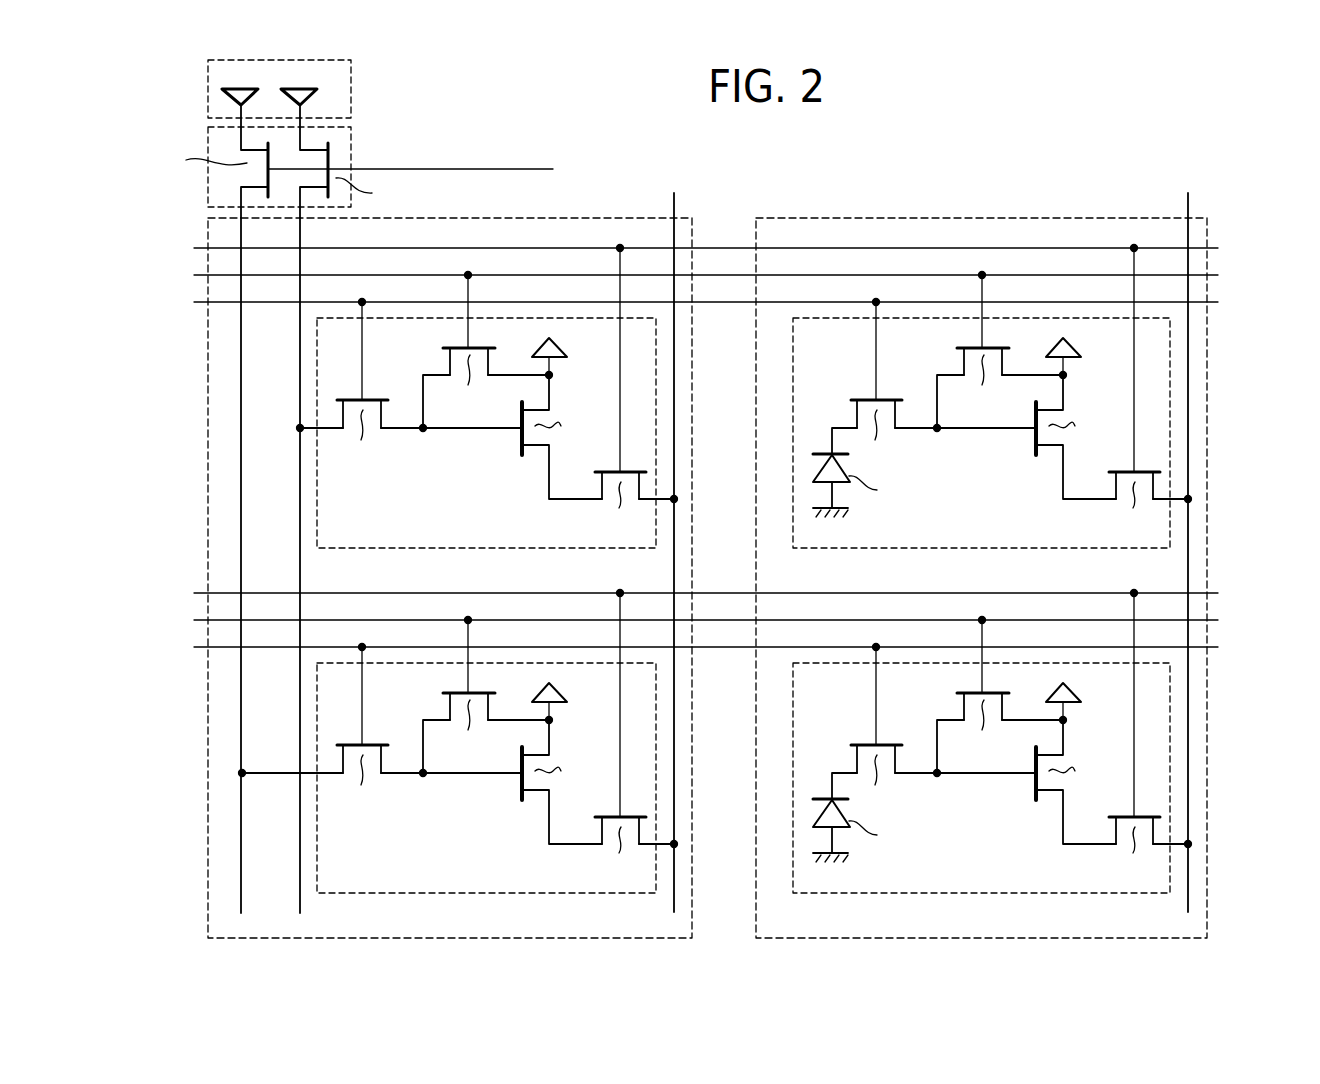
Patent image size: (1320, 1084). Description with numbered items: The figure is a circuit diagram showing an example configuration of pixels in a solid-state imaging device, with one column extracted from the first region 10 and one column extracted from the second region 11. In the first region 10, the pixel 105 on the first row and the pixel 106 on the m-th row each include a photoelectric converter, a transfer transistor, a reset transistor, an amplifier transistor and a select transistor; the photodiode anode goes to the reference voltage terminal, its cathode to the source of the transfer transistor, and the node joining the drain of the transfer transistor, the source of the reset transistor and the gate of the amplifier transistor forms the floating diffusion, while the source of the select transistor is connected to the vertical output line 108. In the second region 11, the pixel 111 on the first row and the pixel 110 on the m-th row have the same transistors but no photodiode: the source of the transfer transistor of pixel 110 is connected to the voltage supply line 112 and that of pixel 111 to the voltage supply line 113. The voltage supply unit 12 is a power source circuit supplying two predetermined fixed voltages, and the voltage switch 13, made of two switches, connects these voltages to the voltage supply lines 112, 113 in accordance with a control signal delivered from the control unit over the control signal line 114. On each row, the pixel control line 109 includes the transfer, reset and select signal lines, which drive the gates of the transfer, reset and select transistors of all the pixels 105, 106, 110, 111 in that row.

The first region 10 is at (1126, 218).
The second region 11 is at (587, 218).
The voltage supply unit 12 is at (352, 72).
The voltage switch 13 is at (352, 135).
The pixel 105 is at (957, 548).
The pixel 106 is at (957, 893).
The vertical output line 108 is at (676, 734).
The pixel control line 109 is at (1229, 245).
The pixel 110 is at (433, 894).
The pixel 111 is at (433, 548).
The voltage supply line 112 is at (242, 230).
The voltage supply line 113 is at (300, 233).
The control signal line 114 is at (443, 165).